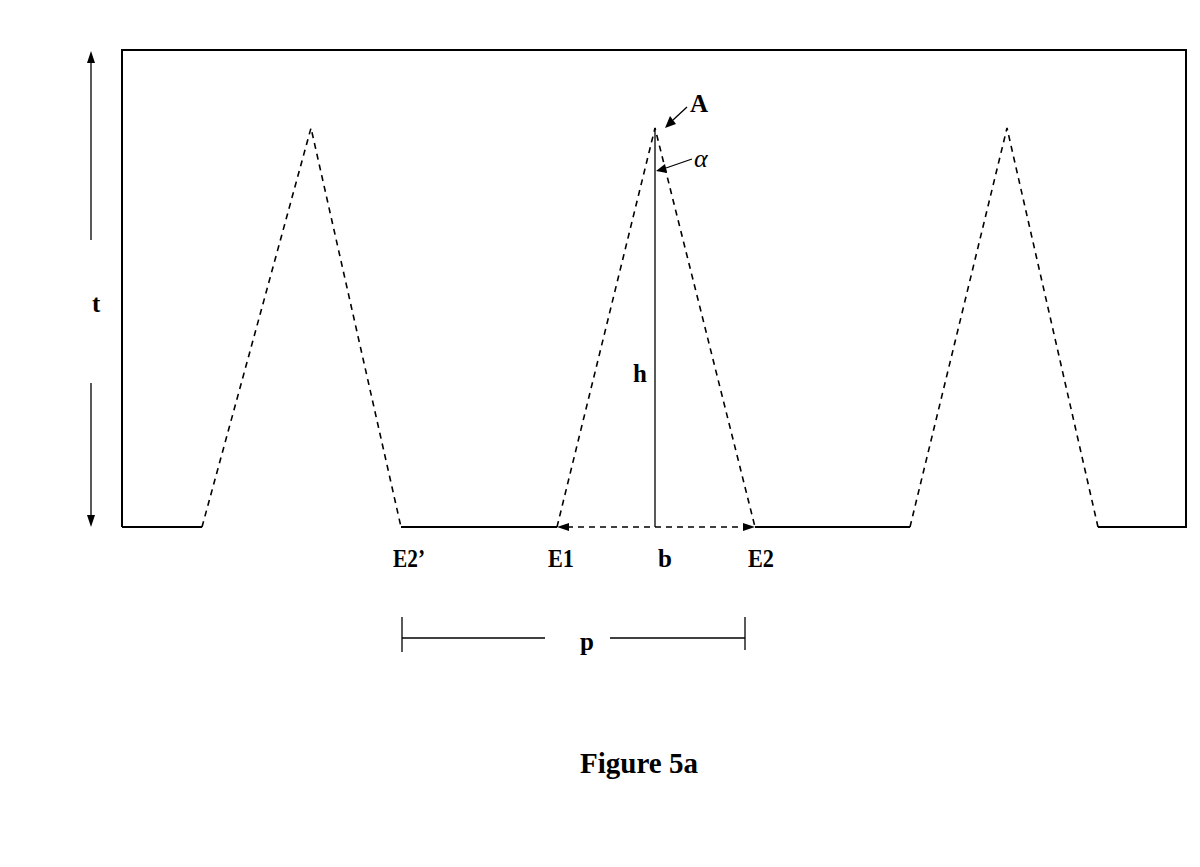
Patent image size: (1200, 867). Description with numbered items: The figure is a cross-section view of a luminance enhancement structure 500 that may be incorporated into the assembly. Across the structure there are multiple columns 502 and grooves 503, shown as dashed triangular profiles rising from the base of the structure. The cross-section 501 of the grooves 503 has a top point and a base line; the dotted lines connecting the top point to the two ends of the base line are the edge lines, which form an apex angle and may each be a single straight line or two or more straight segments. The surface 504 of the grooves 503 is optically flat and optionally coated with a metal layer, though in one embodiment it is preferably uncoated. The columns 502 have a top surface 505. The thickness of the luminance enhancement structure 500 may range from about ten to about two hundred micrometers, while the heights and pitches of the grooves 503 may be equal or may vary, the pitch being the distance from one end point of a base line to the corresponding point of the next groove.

The luminance enhancement structure 500 is at (157, 494).
The cross-section of the grooves 501 is at (721, 378).
The columns 502 is at (479, 450).
The grooves 503 is at (301, 327).
The surface of the grooves 504 is at (1045, 377).
The top surface 505 is at (822, 538).